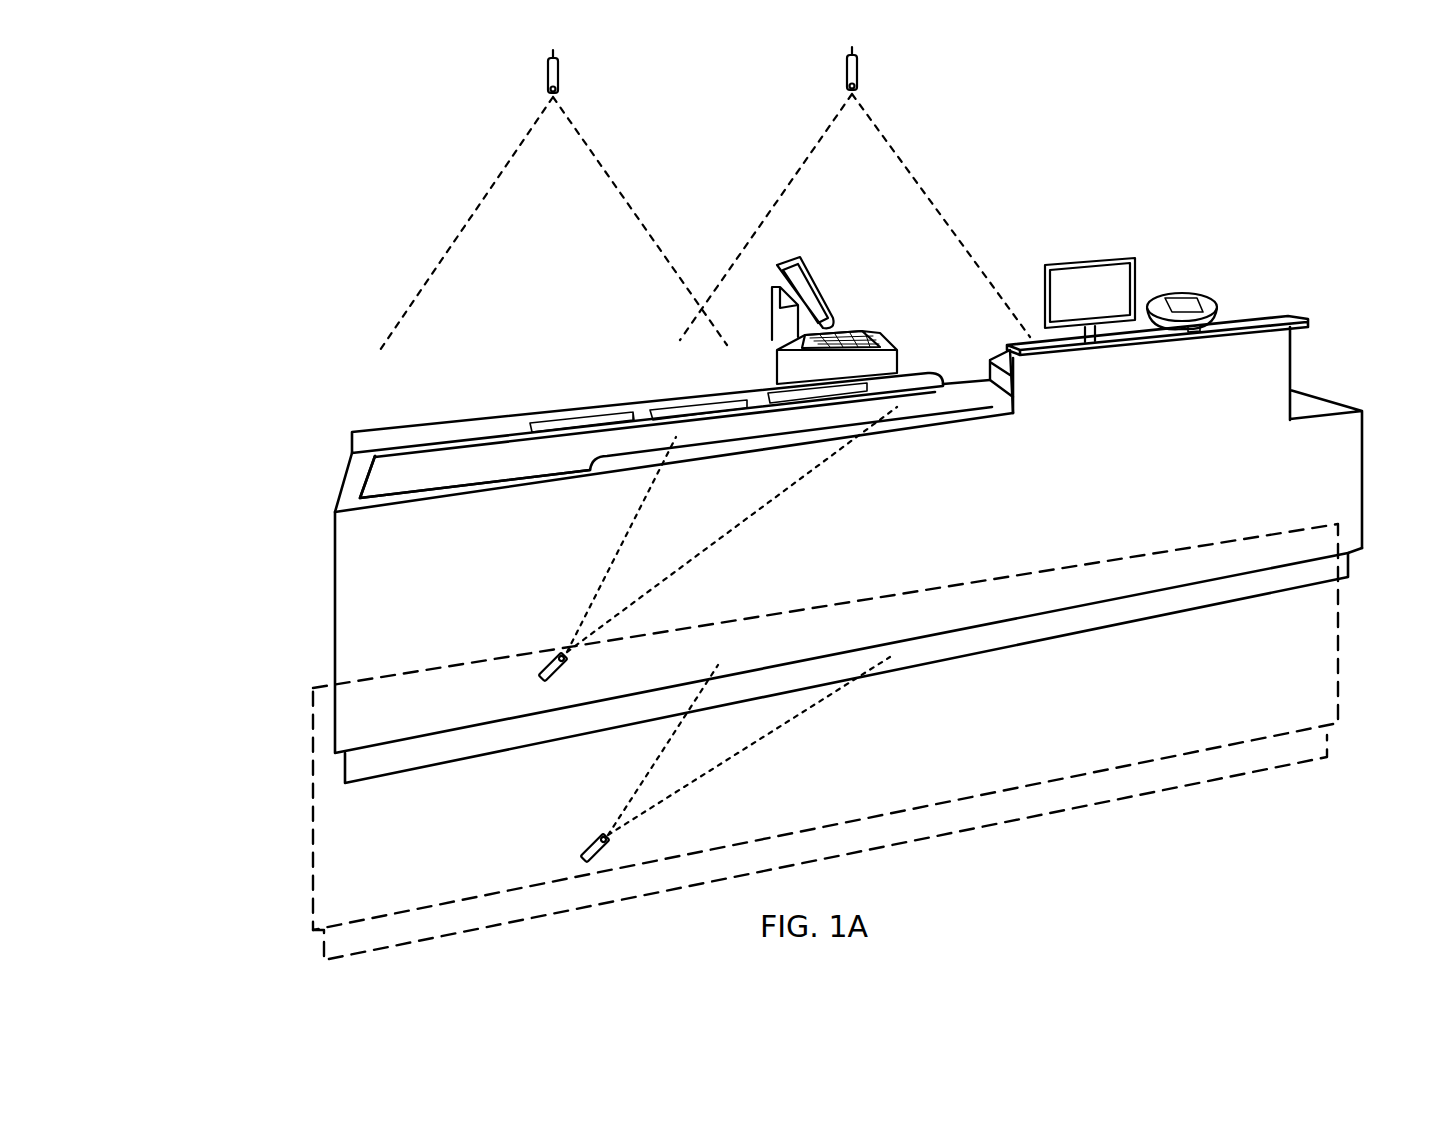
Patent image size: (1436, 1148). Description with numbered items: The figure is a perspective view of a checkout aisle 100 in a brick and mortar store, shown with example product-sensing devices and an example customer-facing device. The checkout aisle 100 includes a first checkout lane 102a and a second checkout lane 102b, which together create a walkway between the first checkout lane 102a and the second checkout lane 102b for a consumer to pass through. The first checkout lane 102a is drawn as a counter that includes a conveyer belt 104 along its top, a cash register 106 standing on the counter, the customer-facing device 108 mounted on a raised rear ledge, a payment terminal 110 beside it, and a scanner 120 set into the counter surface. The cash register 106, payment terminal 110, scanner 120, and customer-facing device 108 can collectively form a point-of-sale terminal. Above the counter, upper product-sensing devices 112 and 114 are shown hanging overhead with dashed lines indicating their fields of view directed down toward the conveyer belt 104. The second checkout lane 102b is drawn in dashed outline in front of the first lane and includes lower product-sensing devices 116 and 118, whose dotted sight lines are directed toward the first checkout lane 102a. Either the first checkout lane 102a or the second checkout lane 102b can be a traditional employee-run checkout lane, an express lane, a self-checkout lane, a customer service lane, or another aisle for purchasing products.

The checkout aisle 100 is at (329, 150).
The first checkout lane 102a is at (343, 559).
The second checkout lane 102b is at (323, 831).
The conveyer belt 104 is at (382, 480).
The cash register 106 is at (853, 286).
The customer-facing device 108 is at (1134, 265).
The payment terminal 110 is at (1208, 294).
The upper product-sensing device 112 is at (548, 78).
The upper product-sensing device 114 is at (846, 72).
The lower product-sensing device 116 is at (547, 668).
The lower product-sensing device 118 is at (587, 850).
The scanner 120 is at (972, 387).